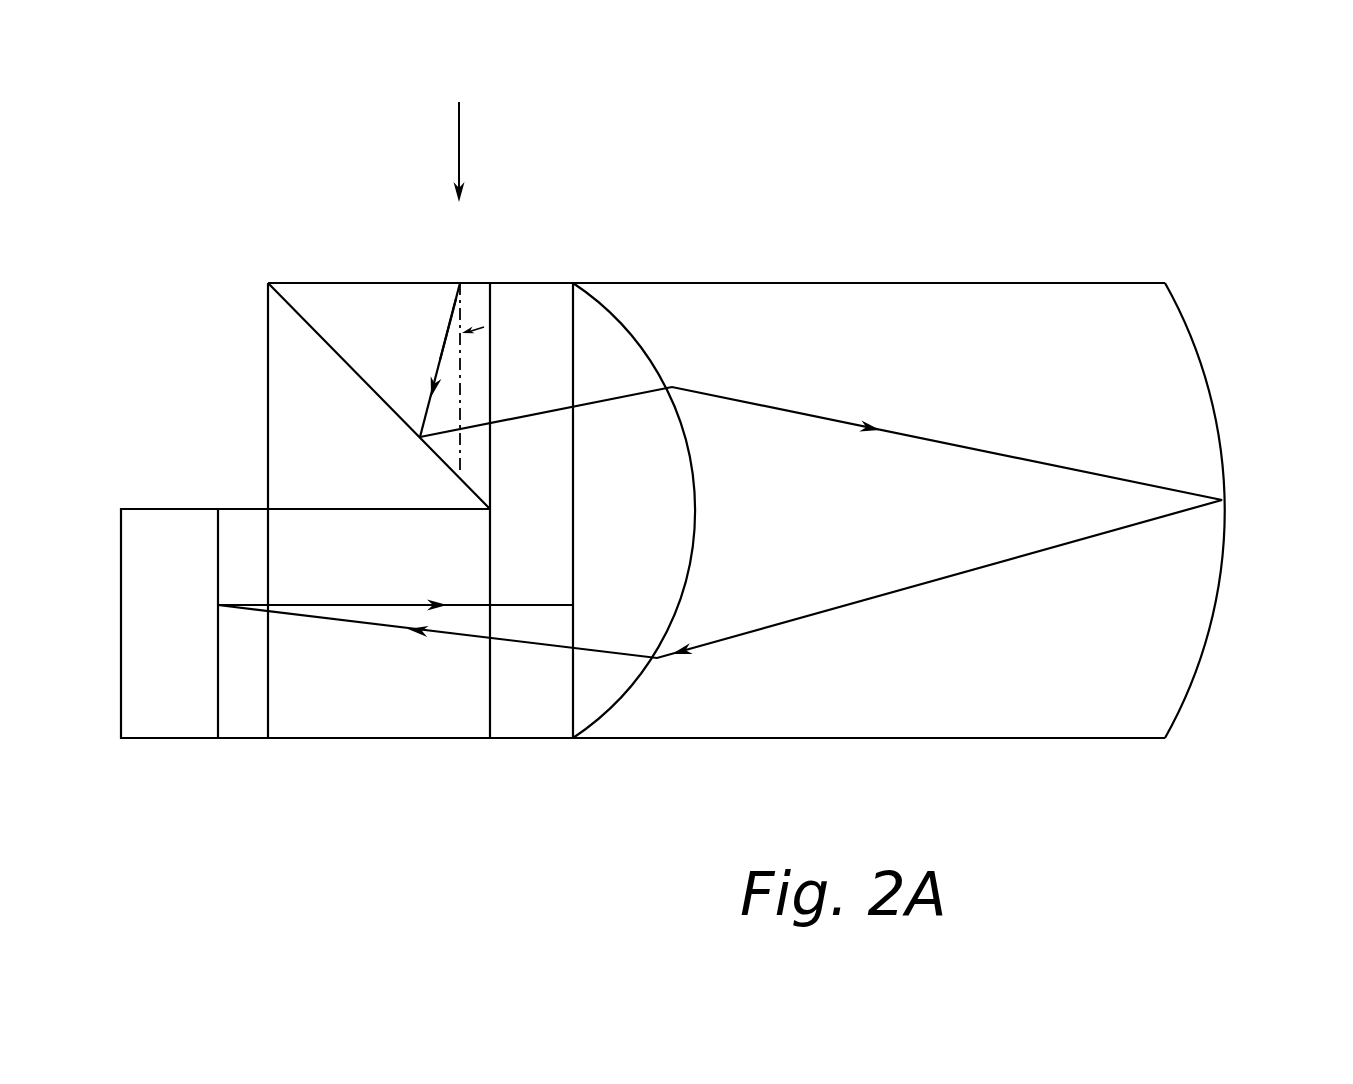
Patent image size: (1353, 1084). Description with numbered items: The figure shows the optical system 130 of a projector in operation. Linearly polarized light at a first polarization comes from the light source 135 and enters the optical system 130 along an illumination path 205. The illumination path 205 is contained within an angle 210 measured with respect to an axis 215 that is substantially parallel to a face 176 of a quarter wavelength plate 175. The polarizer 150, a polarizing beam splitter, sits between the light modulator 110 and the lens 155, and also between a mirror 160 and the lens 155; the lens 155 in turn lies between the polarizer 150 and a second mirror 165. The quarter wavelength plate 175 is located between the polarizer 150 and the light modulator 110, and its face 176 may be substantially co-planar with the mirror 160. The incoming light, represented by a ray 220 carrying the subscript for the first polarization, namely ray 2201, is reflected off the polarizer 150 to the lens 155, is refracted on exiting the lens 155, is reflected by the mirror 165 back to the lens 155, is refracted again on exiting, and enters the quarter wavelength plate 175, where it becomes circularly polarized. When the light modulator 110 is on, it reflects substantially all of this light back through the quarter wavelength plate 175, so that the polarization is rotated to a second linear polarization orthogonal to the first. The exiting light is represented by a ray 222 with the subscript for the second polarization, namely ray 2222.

The light modulator 110 is at (150, 740).
The optical system 130 is at (879, 280).
The light source 135 is at (458, 131).
The polarizer 150 is at (300, 317).
The lens 155 is at (609, 464).
The mirror 160 is at (268, 430).
The mirror 165 is at (1213, 457).
The quarter wavelength plate 175 is at (238, 740).
The face 176 is at (270, 563).
The illumination path 205 is at (455, 303).
The angle 210 is at (432, 330).
The axis 215 is at (464, 363).
The ray 220 is at (720, 511).
The ray at first polarization 2201 is at (439, 363).
The ray 222 is at (395, 565).
The ray at second polarization 2222 is at (372, 603).